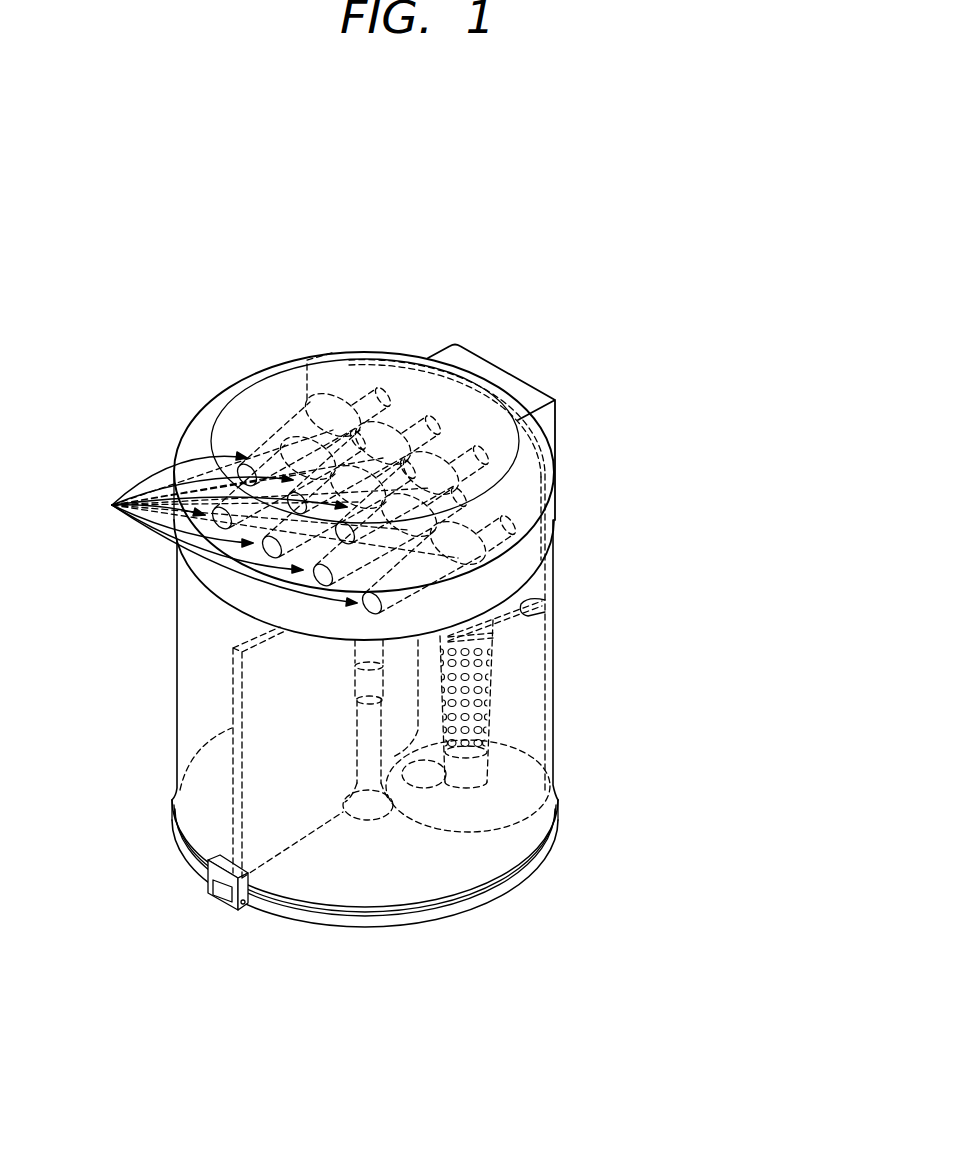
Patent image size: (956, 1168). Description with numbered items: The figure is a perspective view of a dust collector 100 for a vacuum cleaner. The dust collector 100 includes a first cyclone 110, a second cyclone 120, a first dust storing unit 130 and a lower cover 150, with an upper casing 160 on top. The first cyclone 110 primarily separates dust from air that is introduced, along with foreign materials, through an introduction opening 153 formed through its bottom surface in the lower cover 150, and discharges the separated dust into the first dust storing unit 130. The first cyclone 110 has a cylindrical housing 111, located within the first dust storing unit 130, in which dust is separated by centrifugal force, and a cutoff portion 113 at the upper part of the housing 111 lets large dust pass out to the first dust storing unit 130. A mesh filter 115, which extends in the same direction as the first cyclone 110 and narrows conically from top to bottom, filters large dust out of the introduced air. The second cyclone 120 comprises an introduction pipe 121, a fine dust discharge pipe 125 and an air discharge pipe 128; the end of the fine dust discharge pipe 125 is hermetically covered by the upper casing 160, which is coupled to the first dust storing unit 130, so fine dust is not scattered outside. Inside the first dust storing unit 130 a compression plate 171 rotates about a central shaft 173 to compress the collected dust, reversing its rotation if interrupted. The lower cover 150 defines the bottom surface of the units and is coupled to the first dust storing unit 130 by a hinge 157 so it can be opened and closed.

The dust collector 100 is at (229, 298).
The first cyclone 110 is at (628, 588).
The housing 111 is at (535, 657).
The cutoff portion 113 is at (547, 602).
The mesh filter 115 is at (422, 705).
The second cyclone 120 is at (507, 301).
The introduction pipe 121 is at (443, 458).
The fine dust discharge pipe 125 is at (408, 478).
The air discharge pipe 128 is at (473, 460).
The first dust storing unit 130 is at (178, 665).
The lower cover 150 is at (465, 873).
The introduction opening 153 is at (420, 782).
The hinge 157 is at (225, 897).
The upper casing 160 is at (193, 416).
The compression plate 171 is at (297, 833).
The central shaft 173 is at (367, 772).